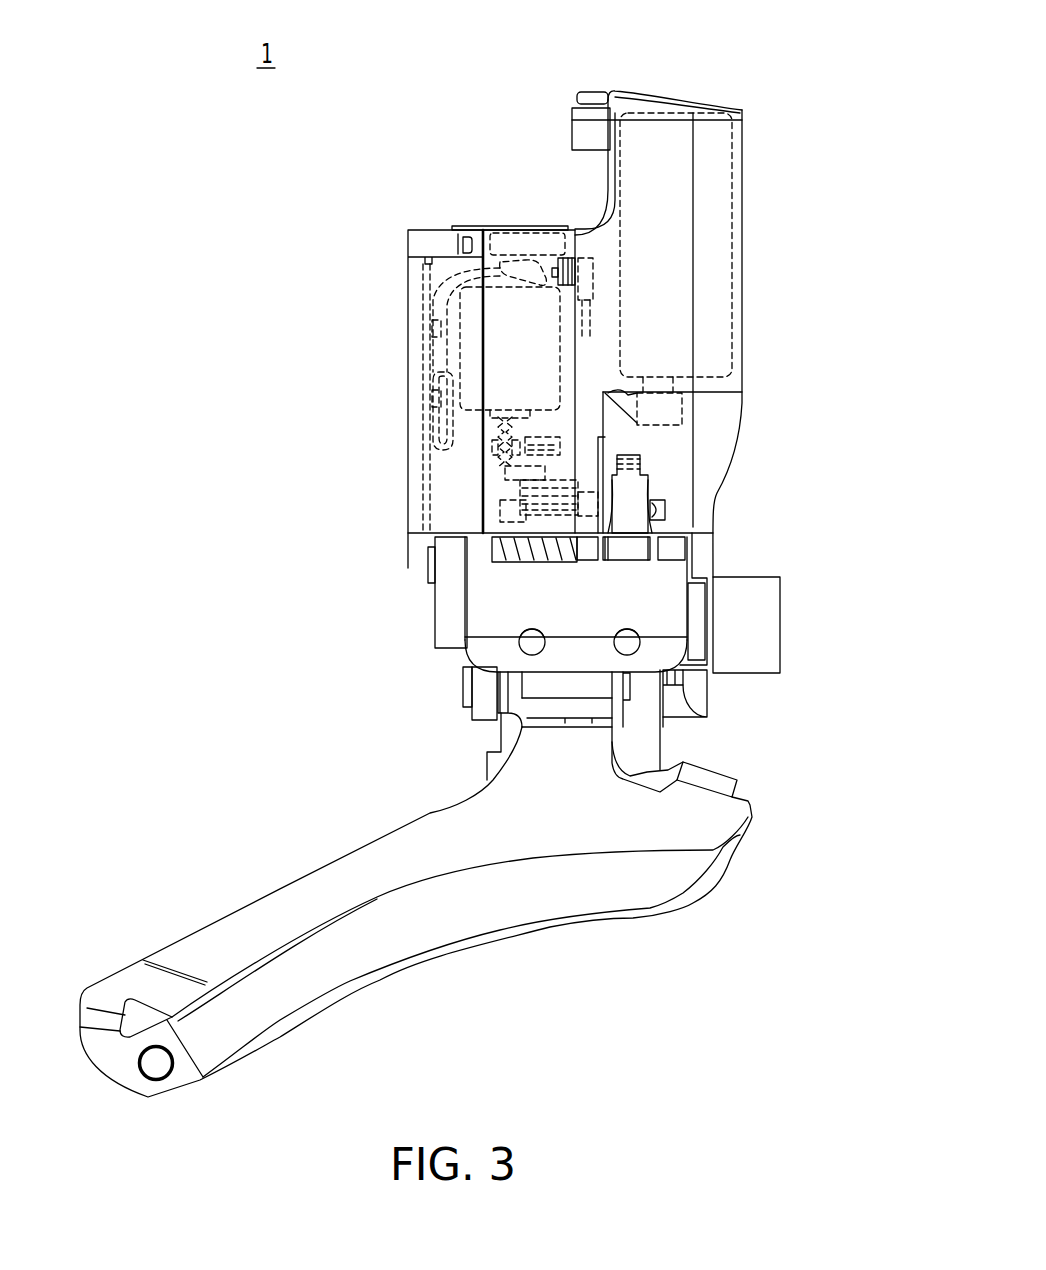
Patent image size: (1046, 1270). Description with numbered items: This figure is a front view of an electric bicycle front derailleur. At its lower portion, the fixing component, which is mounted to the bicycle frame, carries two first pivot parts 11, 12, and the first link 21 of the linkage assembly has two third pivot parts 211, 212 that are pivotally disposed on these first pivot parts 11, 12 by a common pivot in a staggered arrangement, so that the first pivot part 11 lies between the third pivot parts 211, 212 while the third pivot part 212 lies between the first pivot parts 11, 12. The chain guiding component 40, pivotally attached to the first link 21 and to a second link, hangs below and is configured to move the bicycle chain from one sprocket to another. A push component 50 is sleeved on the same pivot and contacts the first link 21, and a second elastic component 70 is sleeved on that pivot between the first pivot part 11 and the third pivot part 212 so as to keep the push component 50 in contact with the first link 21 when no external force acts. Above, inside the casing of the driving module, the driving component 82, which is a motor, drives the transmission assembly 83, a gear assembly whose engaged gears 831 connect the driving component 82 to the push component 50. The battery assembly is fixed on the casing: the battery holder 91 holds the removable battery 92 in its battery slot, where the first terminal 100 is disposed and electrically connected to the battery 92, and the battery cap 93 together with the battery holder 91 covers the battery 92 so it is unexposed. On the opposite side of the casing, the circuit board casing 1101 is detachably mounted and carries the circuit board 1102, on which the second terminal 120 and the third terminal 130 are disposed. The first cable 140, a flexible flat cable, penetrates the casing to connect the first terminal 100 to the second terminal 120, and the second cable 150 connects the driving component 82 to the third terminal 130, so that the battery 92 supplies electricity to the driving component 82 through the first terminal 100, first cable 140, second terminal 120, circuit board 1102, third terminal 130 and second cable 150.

The first pivot part 11 is at (587, 552).
The first pivot part 12 is at (450, 550).
The first link 21 is at (500, 622).
The chain guiding component 40 is at (277, 903).
The push component 50 is at (628, 542).
The second elastic component 70 is at (500, 525).
The driving component 82 is at (497, 320).
The transmission assembly 83 is at (563, 436).
The battery holder 91 is at (744, 258).
The battery 92 is at (735, 198).
The battery cap 93 is at (625, 91).
The first terminal 100 is at (665, 410).
The second terminal 120 is at (432, 334).
The third terminal 130 is at (430, 403).
The first cable 140 is at (520, 262).
The second cable 150 is at (438, 430).
The third pivot part 211 is at (675, 548).
The third pivot part 212 is at (480, 548).
The gear 831 is at (607, 448).
The circuit board casing 1101 is at (408, 300).
The circuit board 1102 is at (428, 477).